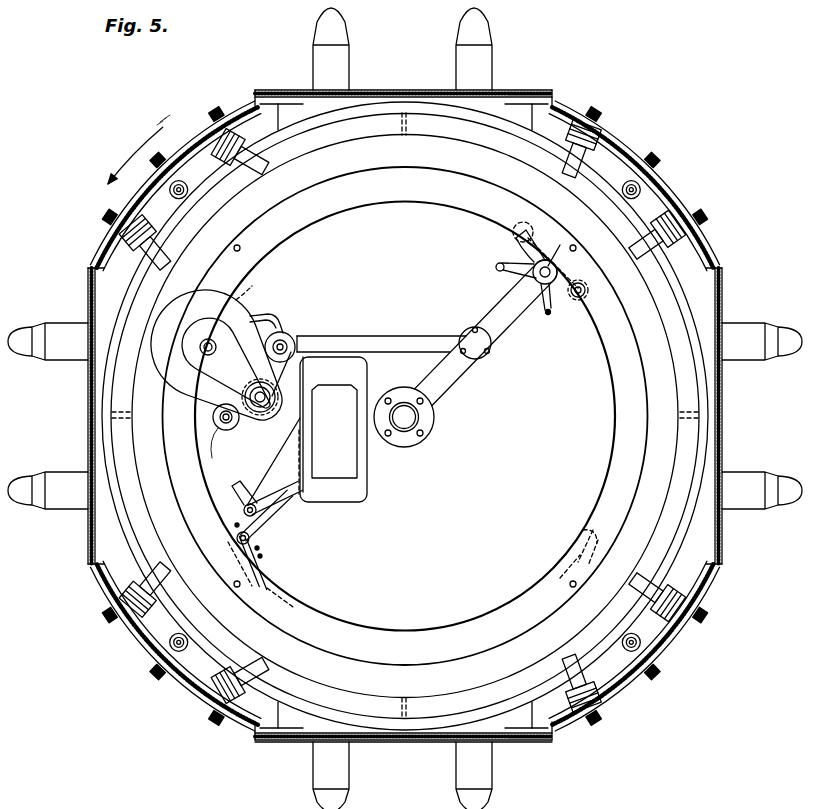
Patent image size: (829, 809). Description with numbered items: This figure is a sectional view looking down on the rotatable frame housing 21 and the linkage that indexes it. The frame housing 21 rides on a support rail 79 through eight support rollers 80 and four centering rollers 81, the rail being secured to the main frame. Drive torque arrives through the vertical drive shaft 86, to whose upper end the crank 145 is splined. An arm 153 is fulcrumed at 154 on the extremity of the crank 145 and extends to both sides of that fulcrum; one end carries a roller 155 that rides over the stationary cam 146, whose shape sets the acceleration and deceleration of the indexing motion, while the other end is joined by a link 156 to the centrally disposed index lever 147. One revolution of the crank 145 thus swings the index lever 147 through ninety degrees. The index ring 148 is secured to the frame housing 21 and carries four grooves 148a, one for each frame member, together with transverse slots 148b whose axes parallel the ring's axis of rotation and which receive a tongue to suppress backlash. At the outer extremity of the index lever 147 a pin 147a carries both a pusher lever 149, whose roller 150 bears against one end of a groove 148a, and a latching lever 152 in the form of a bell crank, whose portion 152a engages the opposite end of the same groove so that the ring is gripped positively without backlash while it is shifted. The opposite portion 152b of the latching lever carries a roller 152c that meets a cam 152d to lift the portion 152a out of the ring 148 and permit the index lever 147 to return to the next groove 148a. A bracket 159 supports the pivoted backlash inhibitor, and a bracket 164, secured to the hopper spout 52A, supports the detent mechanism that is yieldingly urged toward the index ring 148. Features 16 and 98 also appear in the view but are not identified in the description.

The rotatable frame housing 21 is at (360, 93).
The bearing ring 16 is at (182, 318).
The support rollers 80 is at (233, 172).
The centering rollers 81 is at (186, 199).
The index ring 148 is at (378, 198).
The hopper spout 52A is at (340, 503).
The index lever 147 is at (455, 383).
The pin 147a is at (486, 328).
The link 156 is at (357, 336).
The latching lever 152 is at (549, 300).
The latching lever portion 152a is at (560, 258).
The latching lever portion 152b is at (510, 280).
The roller 152c is at (497, 268).
The cam 152d is at (262, 317).
The pusher lever 149 is at (513, 240).
The roller 150 is at (513, 232).
The stop pin 98 is at (578, 298).
The stationary cam 146 is at (240, 300).
The crank 145 is at (216, 330).
The vertical drive shaft 86 is at (200, 347).
The arm 153 is at (289, 338).
The fulcrum 154 is at (262, 414).
The roller 155 is at (222, 430).
The bracket 164 is at (275, 467).
The bracket 159 is at (265, 520).
The slots 148b is at (268, 585).
The grooves 148a is at (588, 532).
The support rail 79 is at (291, 638).